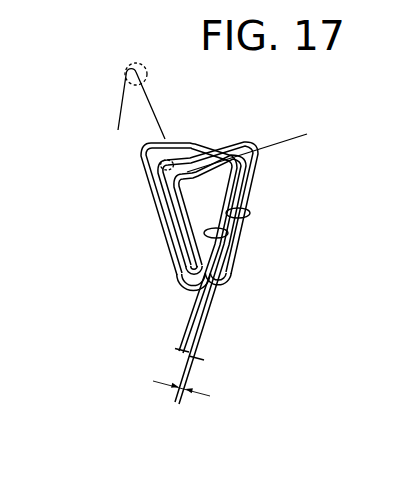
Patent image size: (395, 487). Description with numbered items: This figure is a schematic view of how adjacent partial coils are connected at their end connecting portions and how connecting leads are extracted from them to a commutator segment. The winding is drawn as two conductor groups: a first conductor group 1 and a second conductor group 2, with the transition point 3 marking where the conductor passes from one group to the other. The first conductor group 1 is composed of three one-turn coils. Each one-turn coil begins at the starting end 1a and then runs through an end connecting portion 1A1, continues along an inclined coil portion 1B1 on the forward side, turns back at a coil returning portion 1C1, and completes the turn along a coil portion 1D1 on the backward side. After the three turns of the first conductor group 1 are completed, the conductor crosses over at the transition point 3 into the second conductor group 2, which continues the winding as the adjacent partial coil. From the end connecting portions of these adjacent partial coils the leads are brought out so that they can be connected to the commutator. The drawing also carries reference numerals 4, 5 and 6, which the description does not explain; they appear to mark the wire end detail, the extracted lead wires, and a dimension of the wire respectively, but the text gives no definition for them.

The first conductor group 1 is at (250, 213).
The starting end 1a is at (292, 138).
The end connecting portion 1A1 is at (190, 186).
The inclined coil portion 1B1 is at (198, 214).
The coil returning portion 1C1 is at (228, 272).
The coil portion 1D1 is at (255, 177).
The second conductor group 2 is at (228, 234).
The transition point 3 is at (167, 158).
The wire end detail 4 is at (125, 80).
The lead wires 5 is at (189, 351).
The wire diameter 6 is at (184, 398).